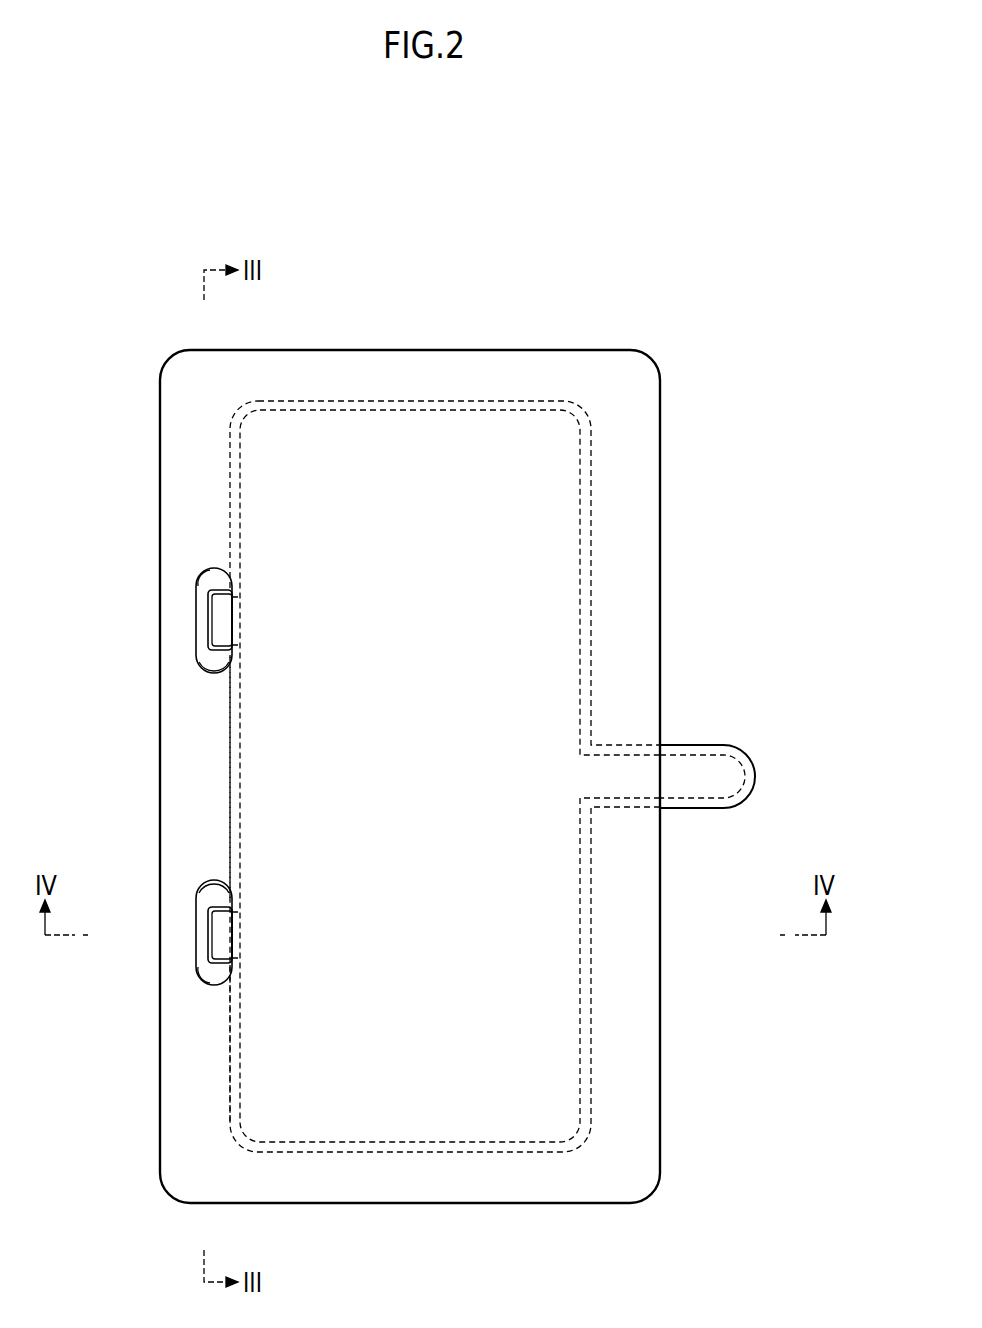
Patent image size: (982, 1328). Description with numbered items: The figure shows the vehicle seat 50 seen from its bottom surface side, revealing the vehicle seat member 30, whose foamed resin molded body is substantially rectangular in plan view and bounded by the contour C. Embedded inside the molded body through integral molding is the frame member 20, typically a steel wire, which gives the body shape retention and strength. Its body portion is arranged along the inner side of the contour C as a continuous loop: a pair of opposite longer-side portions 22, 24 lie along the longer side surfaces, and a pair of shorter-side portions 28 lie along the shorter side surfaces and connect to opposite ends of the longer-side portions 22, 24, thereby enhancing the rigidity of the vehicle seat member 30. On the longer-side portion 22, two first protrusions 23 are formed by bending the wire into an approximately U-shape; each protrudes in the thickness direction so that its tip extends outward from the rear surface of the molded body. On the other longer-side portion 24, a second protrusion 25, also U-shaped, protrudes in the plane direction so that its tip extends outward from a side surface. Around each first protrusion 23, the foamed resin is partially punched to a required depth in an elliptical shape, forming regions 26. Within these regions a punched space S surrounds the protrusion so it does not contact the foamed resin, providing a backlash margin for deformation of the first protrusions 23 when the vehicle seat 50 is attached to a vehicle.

The vehicle seat 50 is at (465, 692).
The vehicle seat member 30 is at (663, 425).
The contour of the foamed resin molded body C is at (483, 350).
The frame member 20 is at (504, 1153).
The longer-side portion 22 is at (230, 748).
The shorter-side portions 28 is at (396, 400).
The longer-side portion 24 is at (591, 857).
The second protrusion 25 is at (745, 752).
The regions 26 is at (205, 600).
The first protrusion 23 is at (215, 618).
The space S is at (213, 660).